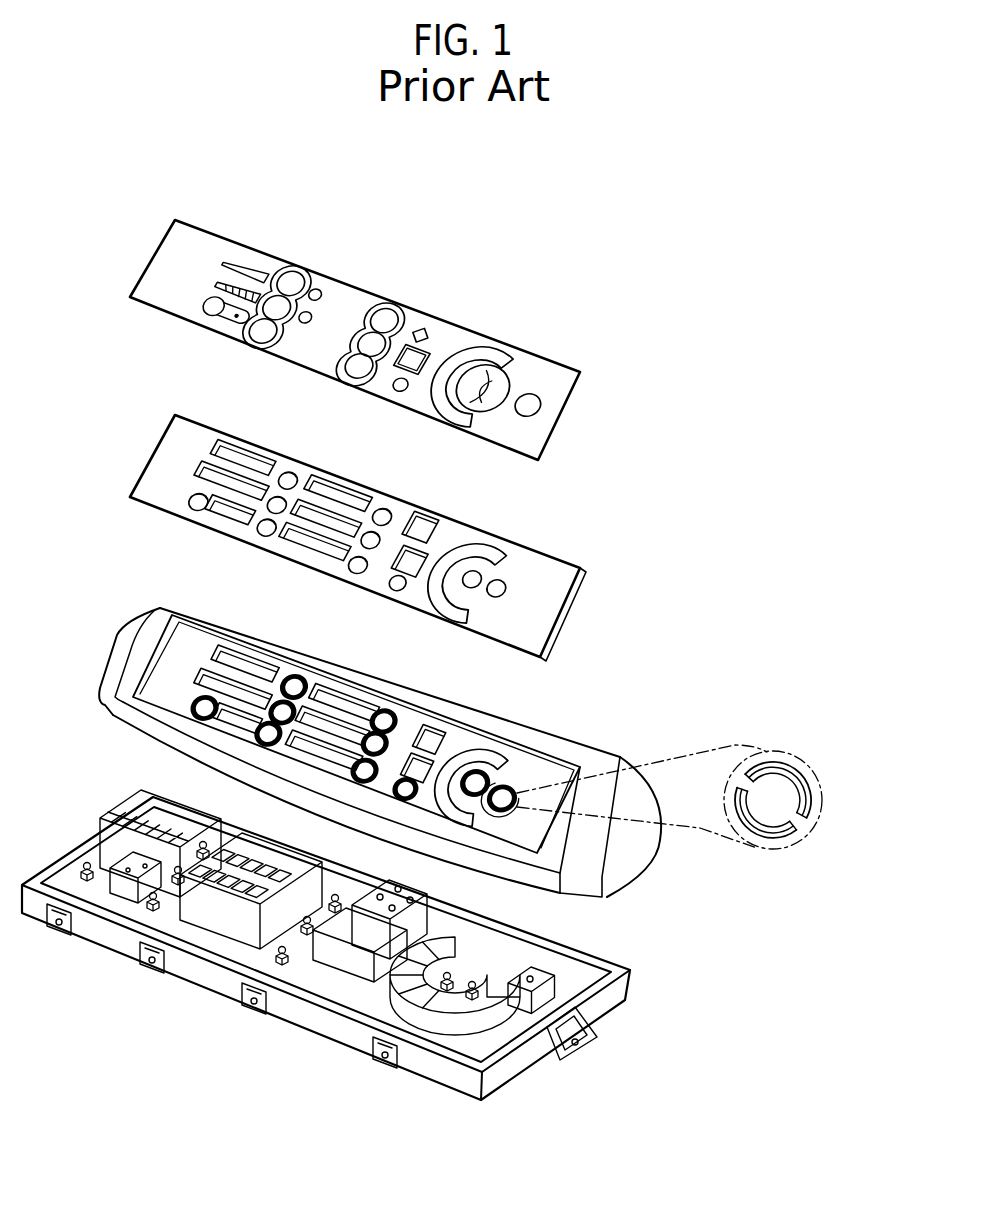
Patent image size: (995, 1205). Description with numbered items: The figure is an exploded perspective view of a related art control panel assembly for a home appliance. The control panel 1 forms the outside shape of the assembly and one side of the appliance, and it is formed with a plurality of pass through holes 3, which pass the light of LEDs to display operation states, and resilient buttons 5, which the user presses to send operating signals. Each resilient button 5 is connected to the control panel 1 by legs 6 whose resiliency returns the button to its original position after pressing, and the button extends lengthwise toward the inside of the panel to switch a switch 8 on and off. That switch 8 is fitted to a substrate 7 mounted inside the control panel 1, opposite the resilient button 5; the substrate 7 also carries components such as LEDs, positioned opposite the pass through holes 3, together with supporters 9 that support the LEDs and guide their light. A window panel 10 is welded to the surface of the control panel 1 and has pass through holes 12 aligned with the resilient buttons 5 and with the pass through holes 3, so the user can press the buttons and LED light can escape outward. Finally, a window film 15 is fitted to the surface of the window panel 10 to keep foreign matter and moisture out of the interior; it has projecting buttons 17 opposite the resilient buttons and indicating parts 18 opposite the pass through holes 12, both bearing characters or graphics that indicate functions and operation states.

The control panel 1 is at (381, 759).
The pass through holes 3 is at (343, 736).
The resilient buttons 5 is at (356, 753).
The legs 6 is at (765, 828).
The substrate 7 is at (613, 1007).
The switch 8 is at (472, 996).
The supporters 9 is at (353, 953).
The window panel 10 is at (395, 538).
The pass through holes 12 is at (487, 550).
The window film 15 is at (394, 325).
The buttons 17 is at (324, 325).
The indicating parts 18 is at (245, 270).